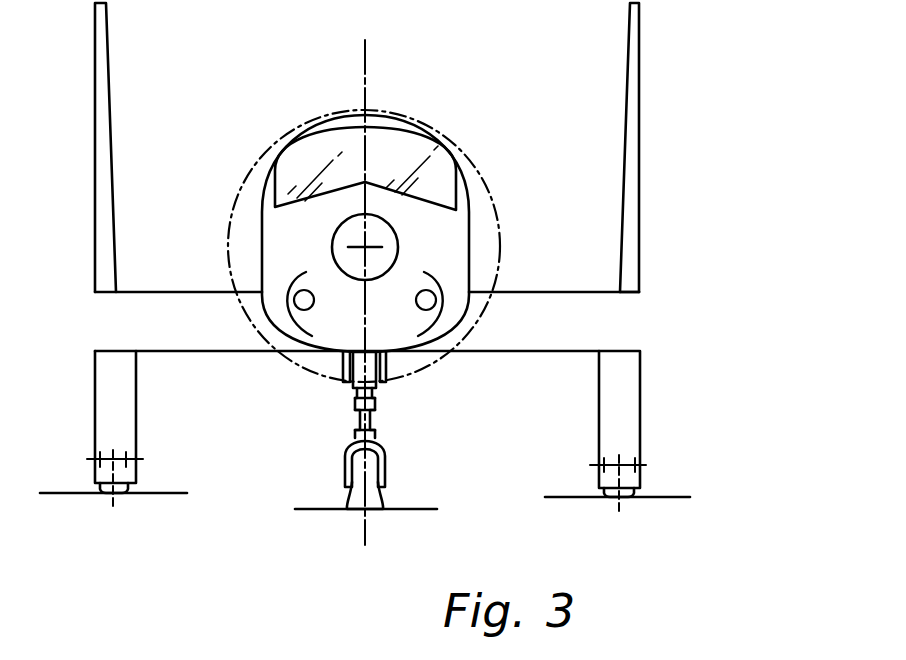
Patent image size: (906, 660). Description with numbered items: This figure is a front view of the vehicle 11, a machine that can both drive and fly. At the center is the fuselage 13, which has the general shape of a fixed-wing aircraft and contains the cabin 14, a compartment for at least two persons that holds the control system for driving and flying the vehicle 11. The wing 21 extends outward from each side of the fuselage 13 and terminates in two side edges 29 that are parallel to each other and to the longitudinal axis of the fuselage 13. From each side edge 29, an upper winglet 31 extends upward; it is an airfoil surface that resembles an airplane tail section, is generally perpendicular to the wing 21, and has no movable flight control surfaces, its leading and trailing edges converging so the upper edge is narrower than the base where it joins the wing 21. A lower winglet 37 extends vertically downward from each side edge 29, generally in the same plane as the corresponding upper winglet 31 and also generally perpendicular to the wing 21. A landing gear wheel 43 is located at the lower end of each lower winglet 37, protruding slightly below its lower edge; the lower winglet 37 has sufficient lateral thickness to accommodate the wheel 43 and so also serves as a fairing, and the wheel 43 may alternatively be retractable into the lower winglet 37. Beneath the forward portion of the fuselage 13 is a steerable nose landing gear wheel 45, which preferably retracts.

The vehicle 11 is at (686, 134).
The fuselage 13 is at (440, 243).
The cabin 14 is at (410, 165).
The wing 21 is at (528, 313).
The side edges 29 is at (631, 293).
The upper winglet 31 is at (632, 247).
The lower winglet 37 is at (624, 427).
The landing gear wheel 43 is at (630, 496).
The steerable nose landing gear wheel 45 is at (372, 500).